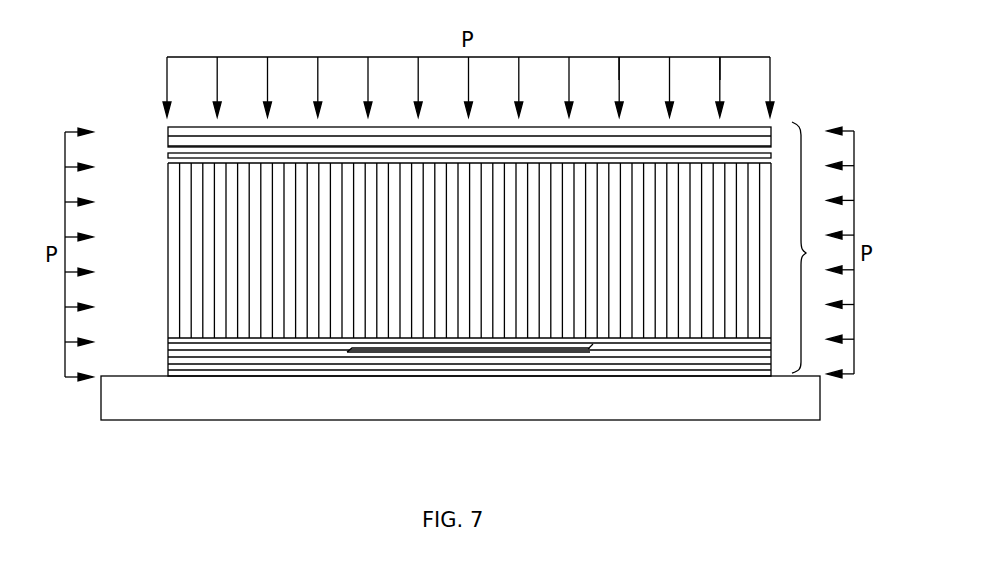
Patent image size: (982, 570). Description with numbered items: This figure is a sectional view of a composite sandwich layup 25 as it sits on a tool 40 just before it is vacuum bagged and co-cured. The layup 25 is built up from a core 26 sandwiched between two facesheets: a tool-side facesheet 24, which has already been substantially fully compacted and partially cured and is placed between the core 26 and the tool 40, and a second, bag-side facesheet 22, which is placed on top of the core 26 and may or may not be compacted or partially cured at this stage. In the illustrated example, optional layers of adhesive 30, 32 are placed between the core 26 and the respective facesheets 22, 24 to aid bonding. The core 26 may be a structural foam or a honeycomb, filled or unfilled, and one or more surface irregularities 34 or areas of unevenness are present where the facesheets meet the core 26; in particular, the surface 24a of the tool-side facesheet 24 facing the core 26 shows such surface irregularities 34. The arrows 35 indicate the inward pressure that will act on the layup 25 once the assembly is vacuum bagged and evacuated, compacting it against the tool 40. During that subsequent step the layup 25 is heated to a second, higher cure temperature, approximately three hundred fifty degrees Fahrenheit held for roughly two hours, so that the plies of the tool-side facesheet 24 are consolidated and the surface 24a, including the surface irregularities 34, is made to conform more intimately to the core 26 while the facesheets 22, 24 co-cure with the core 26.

The second facesheet 22 is at (171, 133).
The layer of adhesive 30 is at (171, 156).
The core 26 is at (198, 245).
The surface of the tool-side facesheet 24a is at (230, 345).
The layer of adhesive 32 is at (186, 348).
The tool-side facesheet 24 is at (185, 366).
The surface irregularities 34 is at (540, 368).
The tool 40 is at (125, 386).
The layup 25 is at (814, 247).
The arrows 35 is at (720, 80).